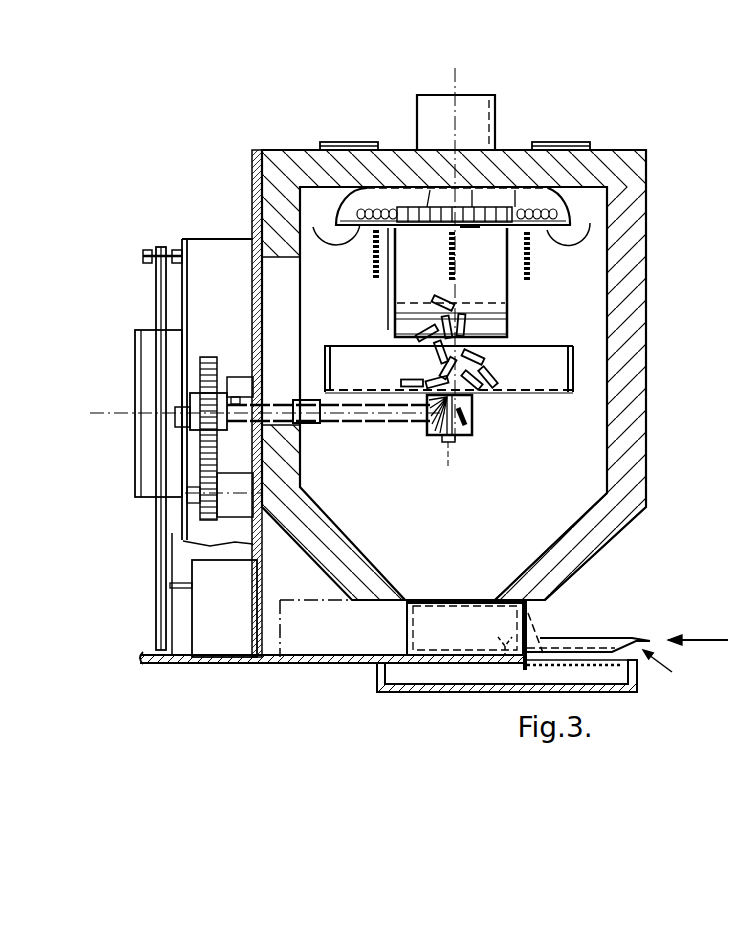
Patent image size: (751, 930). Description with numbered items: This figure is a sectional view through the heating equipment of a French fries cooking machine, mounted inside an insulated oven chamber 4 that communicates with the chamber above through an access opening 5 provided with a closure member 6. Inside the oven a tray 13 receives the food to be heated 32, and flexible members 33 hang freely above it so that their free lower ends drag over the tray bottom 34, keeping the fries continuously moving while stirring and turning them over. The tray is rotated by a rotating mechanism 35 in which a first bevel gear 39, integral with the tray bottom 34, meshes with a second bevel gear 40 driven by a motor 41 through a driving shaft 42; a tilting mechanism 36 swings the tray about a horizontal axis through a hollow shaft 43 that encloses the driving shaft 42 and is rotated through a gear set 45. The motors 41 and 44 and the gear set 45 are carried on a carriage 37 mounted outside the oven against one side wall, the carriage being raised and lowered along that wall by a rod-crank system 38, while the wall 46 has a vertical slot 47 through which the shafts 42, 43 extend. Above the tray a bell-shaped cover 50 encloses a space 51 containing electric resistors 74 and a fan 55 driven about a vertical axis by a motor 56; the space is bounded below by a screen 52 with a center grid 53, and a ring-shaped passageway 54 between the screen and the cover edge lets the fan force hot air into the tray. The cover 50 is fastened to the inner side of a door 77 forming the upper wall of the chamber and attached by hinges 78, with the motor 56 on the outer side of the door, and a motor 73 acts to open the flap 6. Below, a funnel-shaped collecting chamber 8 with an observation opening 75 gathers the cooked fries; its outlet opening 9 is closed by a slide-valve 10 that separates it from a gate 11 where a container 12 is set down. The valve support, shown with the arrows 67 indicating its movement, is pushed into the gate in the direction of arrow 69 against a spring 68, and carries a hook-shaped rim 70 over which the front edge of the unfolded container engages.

The oven chamber 4 is at (650, 358).
The access opening 5 is at (509, 306).
The closure member 6 is at (497, 288).
The collecting chamber 8 is at (540, 517).
The outlet opening 9 is at (413, 598).
The slide-valve 10 is at (310, 600).
The gate 11 is at (446, 637).
The container 12 is at (634, 625).
The tray 13 is at (562, 346).
The food to be heated 32 is at (493, 381).
The flexible members 33 is at (372, 252).
The tray bottom 34 is at (555, 395).
The rotating mechanism 35 is at (478, 420).
The tilting mechanism 36 is at (372, 428).
The carriage 37 is at (207, 232).
The rod-crank system 38 is at (151, 562).
The first bevel gear 39 is at (476, 402).
The second bevel gear 40 is at (449, 443).
The motor 41 is at (174, 395).
The driving shaft 42 is at (333, 413).
The hollow shaft 43 is at (305, 400).
The motor 44 is at (230, 487).
The gear set 45 is at (226, 370).
The wall 46 is at (278, 158).
The vertical slot 47 is at (300, 268).
The bell-shaped cover 50 is at (626, 166).
The space 51 is at (518, 200).
The screen 52 is at (377, 281).
The center grid 53 is at (471, 228).
The ring-shaped passageway 54 is at (454, 222).
The fan 55 is at (488, 211).
The motor 56 is at (466, 105).
The flow direction 67 is at (592, 648).
The spring 68 is at (598, 673).
The arrow 69 is at (701, 641).
The rim 70 is at (531, 607).
The motor 73 is at (222, 632).
The electric resistors 74 is at (566, 203).
The opening 75 is at (590, 543).
The door 77 is at (410, 165).
The hinges 78 is at (338, 143).